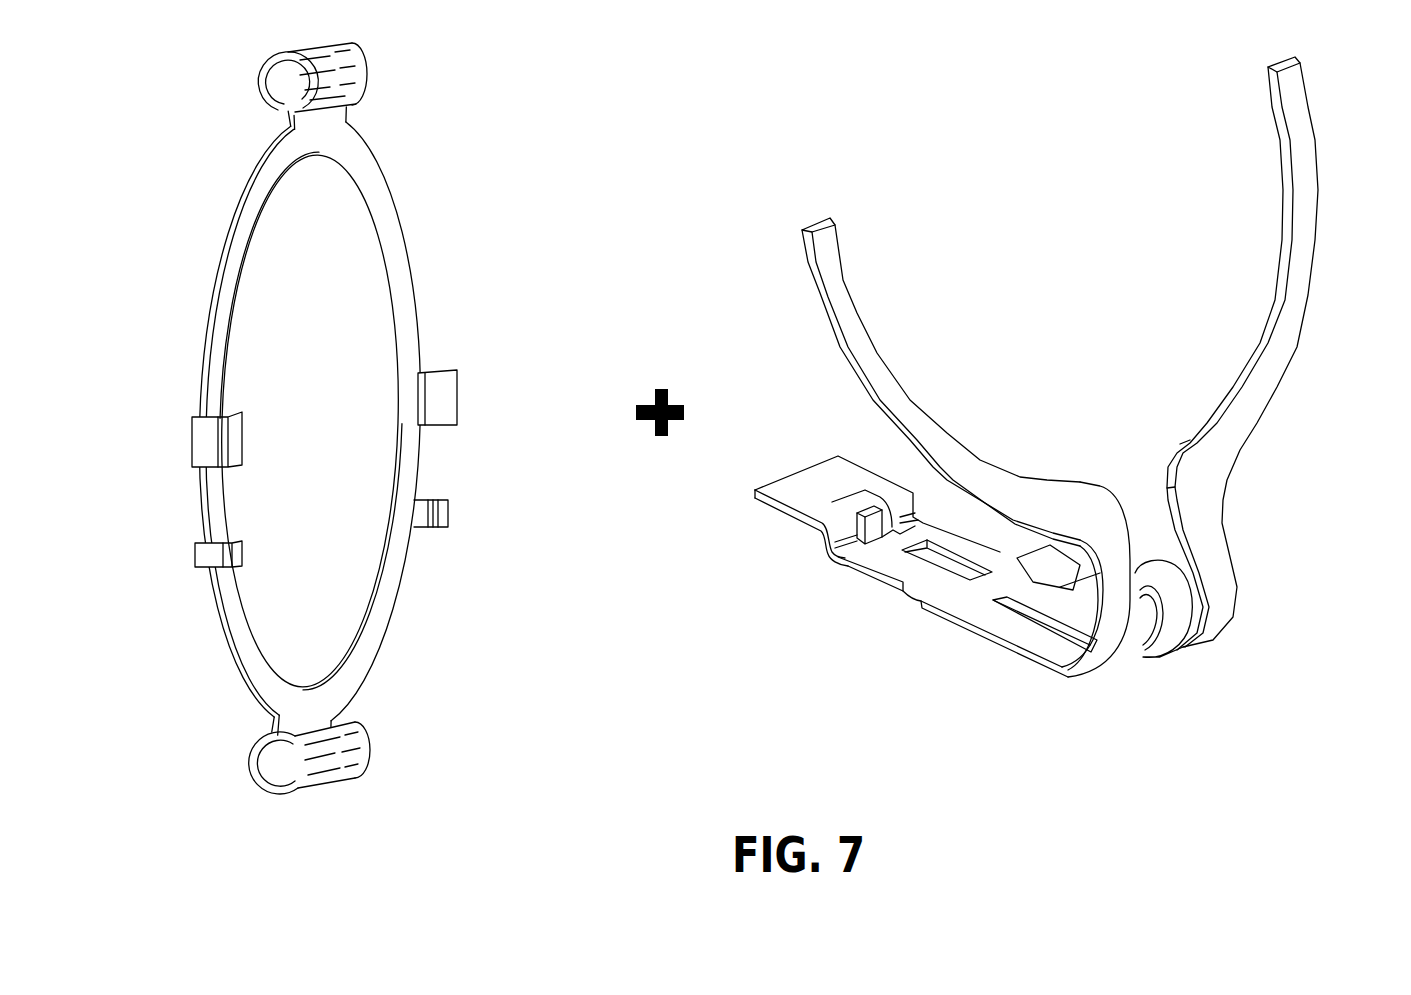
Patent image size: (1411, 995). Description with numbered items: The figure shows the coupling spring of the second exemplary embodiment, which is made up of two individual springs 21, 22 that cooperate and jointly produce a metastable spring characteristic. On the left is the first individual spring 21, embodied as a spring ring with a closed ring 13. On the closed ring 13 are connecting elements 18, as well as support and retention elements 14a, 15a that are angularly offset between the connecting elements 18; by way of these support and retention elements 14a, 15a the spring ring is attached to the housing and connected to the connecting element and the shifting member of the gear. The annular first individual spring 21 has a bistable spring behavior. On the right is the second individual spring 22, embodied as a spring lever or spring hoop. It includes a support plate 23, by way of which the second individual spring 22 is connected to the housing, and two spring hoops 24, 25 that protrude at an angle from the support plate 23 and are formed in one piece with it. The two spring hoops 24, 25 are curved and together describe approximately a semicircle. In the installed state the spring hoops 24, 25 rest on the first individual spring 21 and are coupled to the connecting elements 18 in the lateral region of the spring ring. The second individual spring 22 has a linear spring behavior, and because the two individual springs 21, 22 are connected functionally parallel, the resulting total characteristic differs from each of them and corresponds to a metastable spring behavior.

The closed ring 13 is at (220, 329).
The support and retention element 14a is at (348, 64).
The support and retention element 15a is at (352, 740).
The connecting elements 18 is at (206, 443).
The first individual spring 21 is at (404, 191).
The second individual spring 22 is at (1030, 645).
The support plate 23 is at (895, 570).
The spring hoop 24 is at (848, 313).
The spring hoop 25 is at (1303, 157).